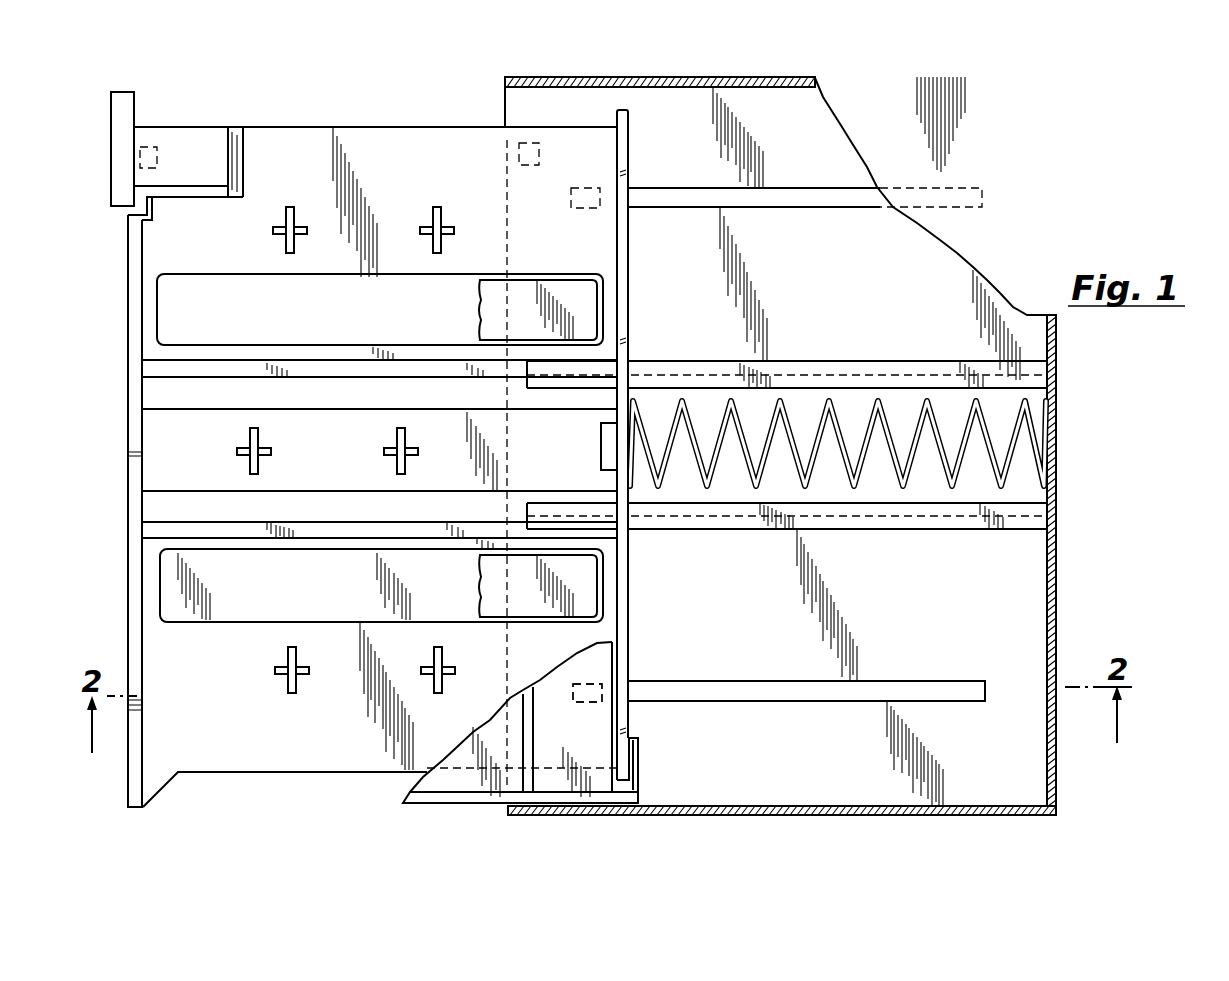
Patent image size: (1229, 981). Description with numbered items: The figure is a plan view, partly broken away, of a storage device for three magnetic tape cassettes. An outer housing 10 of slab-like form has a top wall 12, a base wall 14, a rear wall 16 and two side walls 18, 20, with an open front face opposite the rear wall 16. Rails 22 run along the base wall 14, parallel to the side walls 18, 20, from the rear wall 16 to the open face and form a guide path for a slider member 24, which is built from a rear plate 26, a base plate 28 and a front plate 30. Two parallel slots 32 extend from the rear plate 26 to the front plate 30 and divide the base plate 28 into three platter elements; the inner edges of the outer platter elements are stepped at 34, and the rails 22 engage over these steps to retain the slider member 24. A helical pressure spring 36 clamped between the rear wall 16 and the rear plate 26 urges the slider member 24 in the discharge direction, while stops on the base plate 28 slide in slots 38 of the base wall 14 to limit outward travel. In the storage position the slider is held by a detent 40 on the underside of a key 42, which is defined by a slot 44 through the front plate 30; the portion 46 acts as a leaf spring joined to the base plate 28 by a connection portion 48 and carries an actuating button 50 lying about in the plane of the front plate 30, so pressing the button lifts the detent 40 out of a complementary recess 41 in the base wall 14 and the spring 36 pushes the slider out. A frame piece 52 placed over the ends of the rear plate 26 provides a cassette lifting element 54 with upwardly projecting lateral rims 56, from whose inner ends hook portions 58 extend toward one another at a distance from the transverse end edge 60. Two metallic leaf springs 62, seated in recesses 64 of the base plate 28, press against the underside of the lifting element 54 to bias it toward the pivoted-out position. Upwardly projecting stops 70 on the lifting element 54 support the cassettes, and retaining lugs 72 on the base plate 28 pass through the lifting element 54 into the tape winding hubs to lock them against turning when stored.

The outer housing 10 is at (1062, 585).
The top wall 12 is at (1003, 158).
The base wall 14 is at (1014, 626).
The rear wall 16 is at (1057, 540).
The side wall 18 is at (666, 88).
The side wall 20 is at (721, 806).
The rails 22 is at (806, 360).
The slider member 24 is at (368, 118).
The rear plate 26 is at (628, 252).
The base plate 28 is at (240, 745).
The front plate 30 is at (143, 657).
The slots 32 is at (335, 398).
The steps 34 is at (228, 372).
The helical pressure spring 36 is at (855, 492).
The slots 38 is at (812, 200).
The detent 40 is at (149, 146).
The recess 41 is at (517, 150).
The key 42 is at (220, 119).
The slot 44 is at (186, 194).
The leaf spring portion 46 is at (208, 152).
The connection portion 48 is at (236, 180).
The actuating button 50 is at (123, 102).
The frame piece 52 is at (412, 806).
The cassette lifting element 54 is at (578, 757).
The lateral rims 56 is at (455, 795).
The hook portions 58 is at (639, 752).
The transverse end edge 60 is at (614, 663).
The leaf springs 62 is at (588, 311).
The recesses 64 is at (358, 306).
The stops 70 is at (535, 716).
The retaining lugs 72 is at (285, 222).